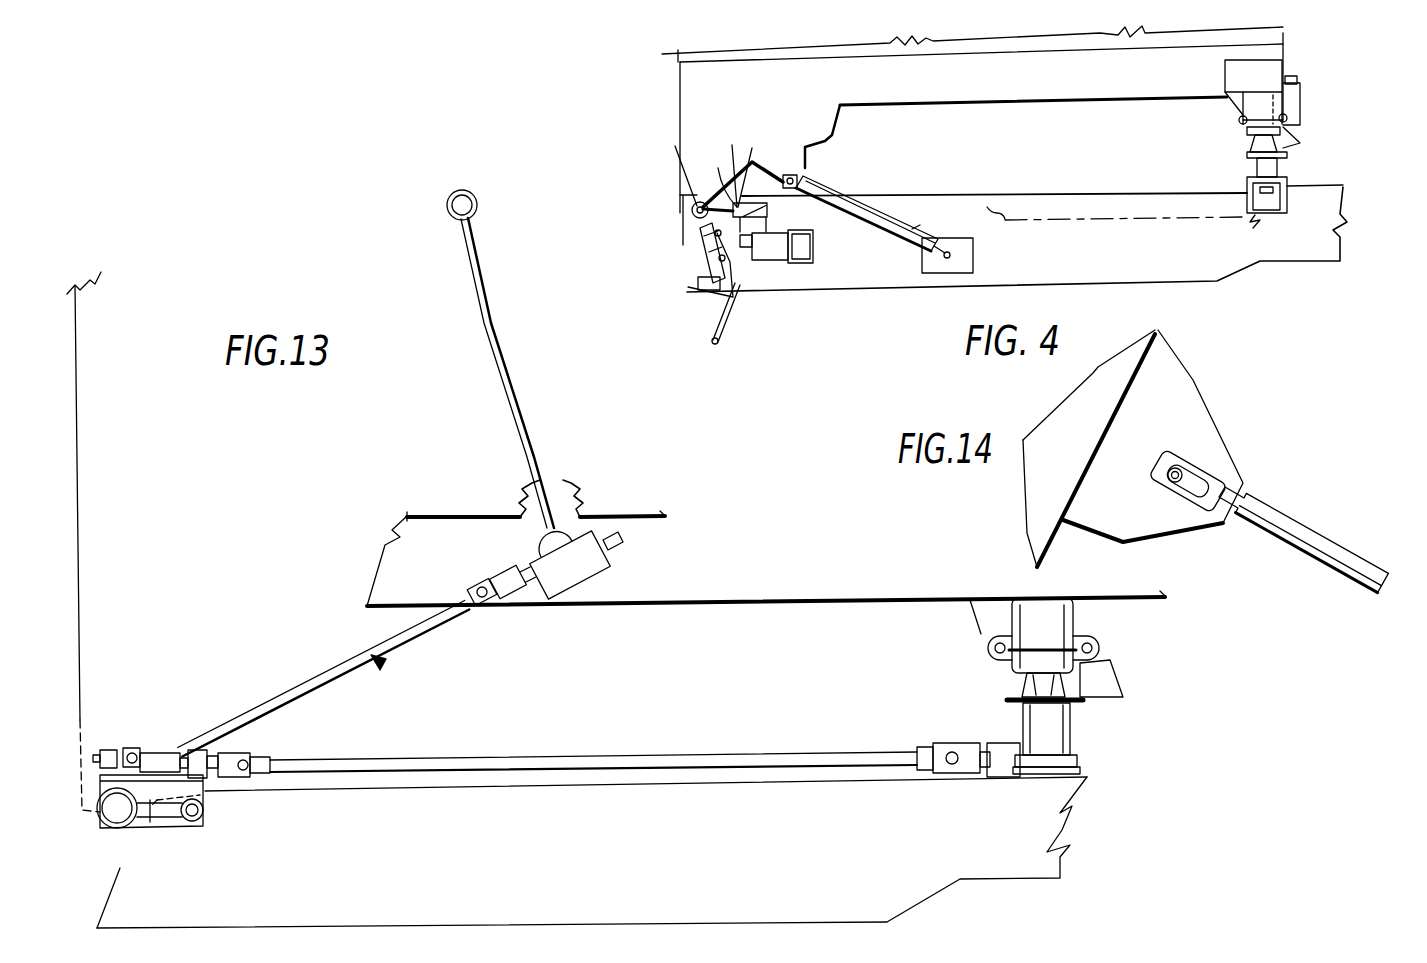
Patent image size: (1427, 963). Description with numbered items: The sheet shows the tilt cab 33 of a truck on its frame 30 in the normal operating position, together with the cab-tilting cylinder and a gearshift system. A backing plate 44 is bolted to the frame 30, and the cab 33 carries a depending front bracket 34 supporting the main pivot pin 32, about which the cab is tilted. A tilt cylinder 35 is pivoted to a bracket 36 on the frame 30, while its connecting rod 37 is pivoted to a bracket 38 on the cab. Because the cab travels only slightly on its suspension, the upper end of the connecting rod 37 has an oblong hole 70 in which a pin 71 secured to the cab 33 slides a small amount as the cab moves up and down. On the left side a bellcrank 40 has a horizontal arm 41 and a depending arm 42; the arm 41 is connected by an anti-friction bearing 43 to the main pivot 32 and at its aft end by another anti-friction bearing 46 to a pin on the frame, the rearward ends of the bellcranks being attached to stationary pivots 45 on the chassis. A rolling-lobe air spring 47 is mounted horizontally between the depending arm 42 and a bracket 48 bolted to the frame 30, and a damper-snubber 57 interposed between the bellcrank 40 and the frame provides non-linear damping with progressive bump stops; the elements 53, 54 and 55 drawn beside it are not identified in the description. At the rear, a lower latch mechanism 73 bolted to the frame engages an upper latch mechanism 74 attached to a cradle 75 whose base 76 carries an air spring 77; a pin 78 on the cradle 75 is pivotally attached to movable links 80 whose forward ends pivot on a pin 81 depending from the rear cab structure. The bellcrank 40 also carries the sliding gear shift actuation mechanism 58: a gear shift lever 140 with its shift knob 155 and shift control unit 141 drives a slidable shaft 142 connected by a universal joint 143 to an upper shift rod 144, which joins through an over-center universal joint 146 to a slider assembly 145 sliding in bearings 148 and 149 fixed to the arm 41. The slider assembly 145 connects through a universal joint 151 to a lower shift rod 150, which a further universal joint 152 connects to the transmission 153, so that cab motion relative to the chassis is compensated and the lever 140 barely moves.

In FIG. 4, the truck frame 30 is at (1188, 263).
In FIG. 13, the truck frame 30 is at (788, 824).
In FIG. 4, the main pivot pin 32 is at (694, 203).
In FIG. 13, the main pivot pin 32 is at (116, 815).
In FIG. 4, the cab 33 is at (1165, 45).
In FIG. 14, the cab 33 is at (1053, 420).
In FIG. 4, the depending front bracket 34 is at (691, 212).
In FIG. 4, the tilt cylinder 35 is at (918, 226).
In FIG. 4, the bracket 36 is at (973, 250).
In FIG. 4, the connecting rod 37 is at (808, 176).
In FIG. 14, the connecting rod 37 is at (1290, 530).
In FIG. 4, the bracket 38 is at (806, 164).
In FIG. 14, the bracket 38 is at (1180, 380).
In FIG. 4, the bellcrank 40 is at (726, 184).
In FIG. 13, the bellcrank 40 is at (72, 782).
In FIG. 4, the horizontal arm 41 is at (680, 160).
In FIG. 13, the horizontal arm 41 is at (152, 820).
In FIG. 4, the depending arm 42 is at (745, 250).
In FIG. 13, the depending arm 42 is at (183, 830).
In FIG. 4, the anti-friction bearing 43 is at (696, 217).
In FIG. 13, the anti-friction bearing 43 is at (104, 820).
In FIG. 4, the backing plate 44 is at (767, 208).
In FIG. 4, the stationary pivots 45 is at (733, 150).
In FIG. 13, the stationary pivots 45 is at (203, 817).
In FIG. 4, the anti-friction bearing 46 is at (753, 156).
In FIG. 13, the anti-friction bearing 46 is at (203, 821).
In FIG. 4, the air spring 47 is at (780, 260).
In FIG. 4, the bracket 48 is at (813, 250).
In FIG. 4, the bracket 53 is at (712, 320).
In FIG. 4, the rod 54 is at (735, 340).
In FIG. 4, the base 55 is at (720, 292).
In FIG. 4, the damper-snubber 57 is at (703, 255).
In FIG. 13, the sliding gear shift actuation mechanism 58 is at (383, 664).
In FIG. 4, the oblong hole 70 is at (855, 190).
In FIG. 14, the oblong hole 70 is at (1153, 460).
In FIG. 4, the pin 71 is at (789, 172).
In FIG. 14, the pin 71 is at (1177, 493).
In FIG. 4, the lower latch mechanism 73 is at (1277, 170).
In FIG. 4, the upper latch mechanism 74 is at (1250, 185).
In FIG. 4, the cradle 75 is at (1250, 157).
In FIG. 4, the base 76 is at (1297, 143).
In FIG. 4, the air spring 77 is at (1250, 131).
In FIG. 4, the pin 78 is at (1290, 118).
In FIG. 4, the movable links 80 is at (1267, 110).
In FIG. 4, the pin 81 is at (1238, 118).
In FIG. 13, the gear shift lever 140 is at (481, 322).
In FIG. 13, the shift control unit 141 is at (612, 570).
In FIG. 13, the slidable shaft 142 is at (520, 553).
In FIG. 13, the universal joint 143 is at (476, 582).
In FIG. 13, the upper shift rod 144 is at (338, 668).
In FIG. 13, the slider assembly 145 is at (163, 757).
In FIG. 13, the over-center universal joint 146 is at (134, 750).
In FIG. 13, the bearing 148 is at (104, 750).
In FIG. 13, the bearing 149 is at (207, 752).
In FIG. 13, the lower shift rod 150 is at (487, 752).
In FIG. 13, the universal joint 151 is at (252, 759).
In FIG. 13, the universal joint 152 is at (948, 750).
In FIG. 13, the transmission 153 is at (990, 740).
In FIG. 13, the shift knob 155 is at (474, 193).